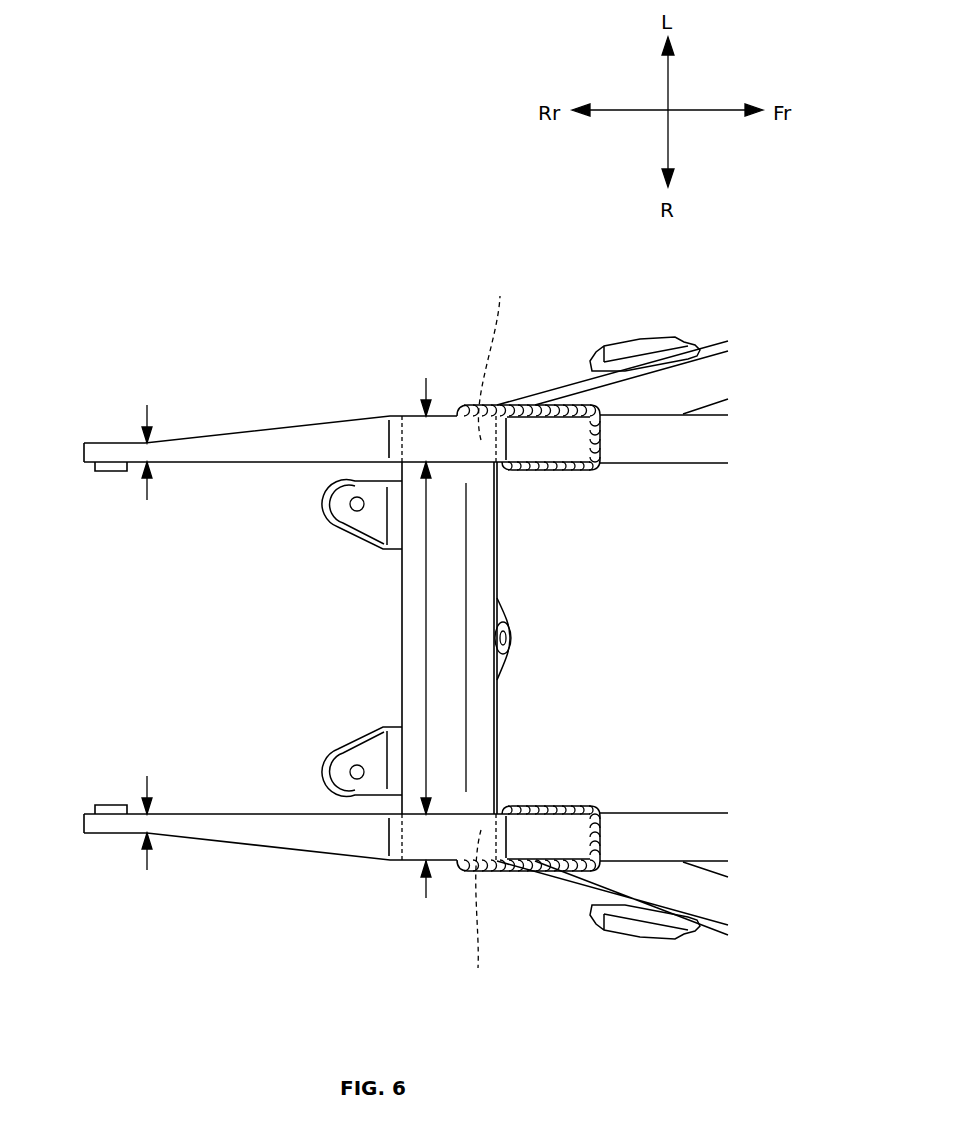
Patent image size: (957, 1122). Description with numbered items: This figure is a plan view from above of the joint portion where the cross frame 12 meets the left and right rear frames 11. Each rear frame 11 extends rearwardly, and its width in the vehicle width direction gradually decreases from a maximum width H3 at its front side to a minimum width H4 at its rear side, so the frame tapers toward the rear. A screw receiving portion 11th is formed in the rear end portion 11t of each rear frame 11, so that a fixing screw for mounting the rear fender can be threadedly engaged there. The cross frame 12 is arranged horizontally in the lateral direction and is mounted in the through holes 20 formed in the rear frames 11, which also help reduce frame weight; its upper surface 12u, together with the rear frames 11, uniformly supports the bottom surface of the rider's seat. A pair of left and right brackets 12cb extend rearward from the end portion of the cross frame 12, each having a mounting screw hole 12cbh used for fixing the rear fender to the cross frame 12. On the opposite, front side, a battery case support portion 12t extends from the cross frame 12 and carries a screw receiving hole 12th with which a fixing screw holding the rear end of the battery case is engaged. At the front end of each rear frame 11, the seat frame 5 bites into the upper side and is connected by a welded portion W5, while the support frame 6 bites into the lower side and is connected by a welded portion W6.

The seat frame 5 is at (689, 450).
The support frame 6 is at (615, 372).
The rear frame 11 is at (265, 428).
The rear end portion 11t is at (92, 446).
The screw receiving portion 11th is at (110, 478).
The cross frame 12 is at (448, 577).
The upper surface 12u is at (433, 607).
The bracket 12cb is at (372, 486).
The mounting screw hole 12cbh is at (360, 512).
The battery case support portion 12t is at (507, 613).
The screw receiving hole 12th is at (512, 638).
The through hole 20 is at (486, 634).
The welded portion W5 is at (567, 407).
The welded portion W6 is at (497, 410).
The maximum width H3 is at (403, 415).
The minimum width H4 is at (150, 452).